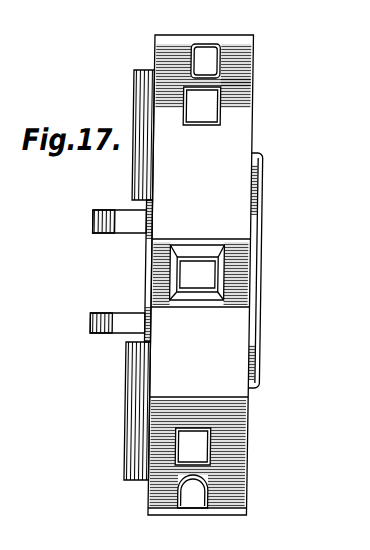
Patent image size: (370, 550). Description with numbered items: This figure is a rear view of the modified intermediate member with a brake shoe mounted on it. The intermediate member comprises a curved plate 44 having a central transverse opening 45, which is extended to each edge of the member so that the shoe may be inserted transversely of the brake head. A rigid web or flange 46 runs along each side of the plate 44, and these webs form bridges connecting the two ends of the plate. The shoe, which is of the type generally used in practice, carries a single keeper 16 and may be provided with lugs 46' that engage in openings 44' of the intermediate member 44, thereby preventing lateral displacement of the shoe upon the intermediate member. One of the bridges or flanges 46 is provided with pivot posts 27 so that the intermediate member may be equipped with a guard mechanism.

The keeper 16 is at (254, 282).
The pivot posts 27 is at (141, 230).
The curved plate 44 is at (247, 276).
The openings 44' is at (247, 275).
The central transverse opening 45 is at (226, 238).
The rigid web or flange 46 is at (206, 270).
The lugs 46' is at (246, 279).